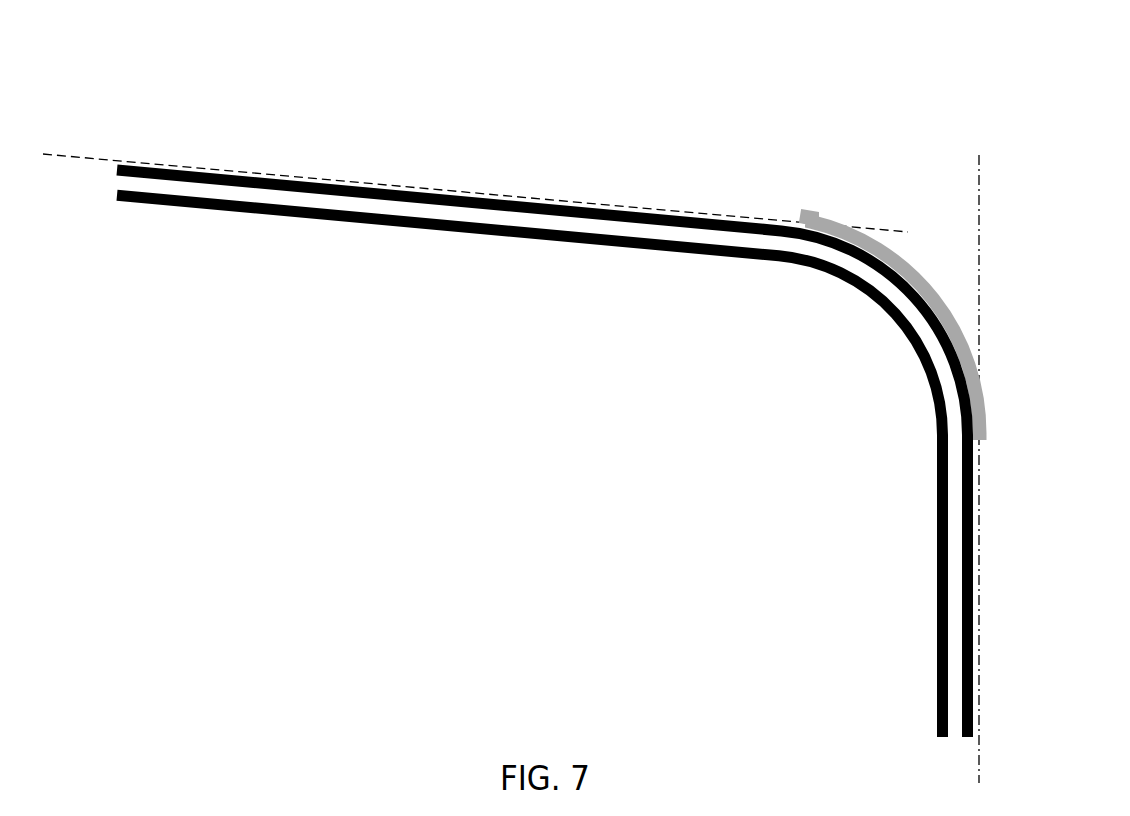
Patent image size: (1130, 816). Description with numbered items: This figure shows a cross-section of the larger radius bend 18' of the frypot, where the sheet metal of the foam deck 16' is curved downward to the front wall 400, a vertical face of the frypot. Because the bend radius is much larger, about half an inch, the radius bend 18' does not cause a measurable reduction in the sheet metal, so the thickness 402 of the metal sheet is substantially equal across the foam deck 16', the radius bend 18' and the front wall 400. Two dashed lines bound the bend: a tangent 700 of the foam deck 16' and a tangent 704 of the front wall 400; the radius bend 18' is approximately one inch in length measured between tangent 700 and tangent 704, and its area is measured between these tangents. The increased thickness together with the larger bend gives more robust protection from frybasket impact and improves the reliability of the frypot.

The foam deck 16' is at (542, 383).
The radius bend 18' is at (946, 304).
The tangent of foam deck 700 is at (875, 268).
The thickness 402 is at (852, 291).
The tangent of front face 704 is at (980, 437).
The front wall 400 is at (960, 630).